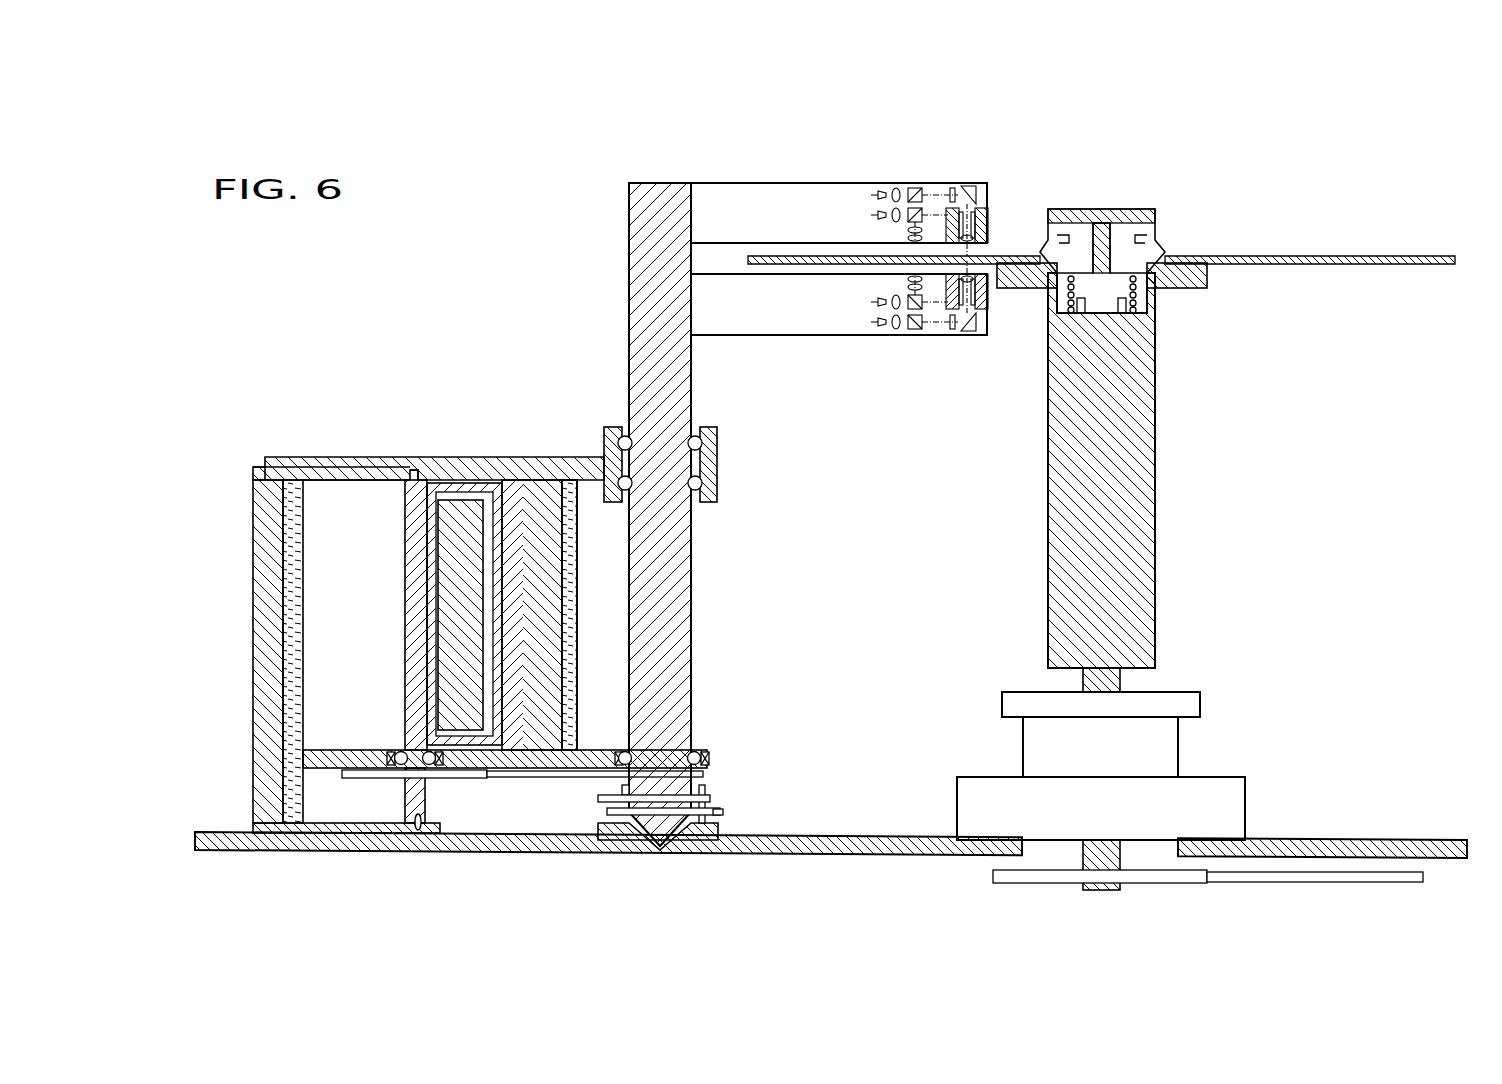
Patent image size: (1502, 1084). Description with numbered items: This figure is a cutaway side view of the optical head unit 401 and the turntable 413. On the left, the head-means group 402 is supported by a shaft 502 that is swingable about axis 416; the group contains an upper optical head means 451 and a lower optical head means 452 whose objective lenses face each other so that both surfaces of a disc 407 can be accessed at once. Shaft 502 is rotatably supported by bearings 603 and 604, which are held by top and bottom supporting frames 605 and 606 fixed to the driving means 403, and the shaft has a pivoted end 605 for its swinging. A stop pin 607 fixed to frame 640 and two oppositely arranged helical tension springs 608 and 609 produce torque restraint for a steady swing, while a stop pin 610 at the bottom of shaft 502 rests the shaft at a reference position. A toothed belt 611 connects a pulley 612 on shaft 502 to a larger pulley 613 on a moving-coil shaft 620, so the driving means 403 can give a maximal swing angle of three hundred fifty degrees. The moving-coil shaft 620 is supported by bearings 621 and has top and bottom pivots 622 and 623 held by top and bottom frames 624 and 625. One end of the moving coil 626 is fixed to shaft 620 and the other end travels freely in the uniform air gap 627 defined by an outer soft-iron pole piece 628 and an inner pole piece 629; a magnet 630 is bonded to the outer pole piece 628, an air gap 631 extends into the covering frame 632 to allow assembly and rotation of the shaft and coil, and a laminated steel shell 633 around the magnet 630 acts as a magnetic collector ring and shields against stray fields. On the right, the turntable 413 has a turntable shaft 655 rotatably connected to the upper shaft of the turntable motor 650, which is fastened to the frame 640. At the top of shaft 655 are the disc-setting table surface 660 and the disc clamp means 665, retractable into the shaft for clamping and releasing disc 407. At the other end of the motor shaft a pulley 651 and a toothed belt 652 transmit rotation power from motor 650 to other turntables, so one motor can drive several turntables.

The optical head unit 401 is at (486, 286).
The optical head-means group 402 is at (953, 374).
The driving means 403 is at (362, 362).
The disc 407 is at (1378, 256).
The turntable 413 is at (1318, 468).
The axis 416 is at (652, 182).
The upper optical head means 451 is at (987, 186).
The lower optical head means 452 is at (987, 334).
The shaft 502 is at (630, 183).
The bearing 603 is at (712, 503).
The bearing 604 is at (700, 748).
The top supporting frame 605 is at (275, 460).
The bottom supporting frame 606 is at (590, 752).
The stop pin 607 is at (712, 796).
The helical tension spring 608 is at (714, 809).
The helical tension spring 609 is at (724, 812).
The stop pin 610 is at (620, 789).
The toothed belt 611 is at (515, 778).
The pulley 612 is at (706, 775).
The pulley 613 is at (484, 779).
The moving-coil shaft 620 is at (408, 475).
The bearing 621 is at (398, 751).
The top pivot 622 is at (414, 820).
The bottom pivot 623 is at (416, 478).
The top frame 624 is at (255, 470).
The bottom frame 625 is at (252, 826).
The moving coil 626 is at (432, 488).
The air gap 627 is at (486, 490).
The outer soft-iron pole piece 628 is at (518, 494).
The inner pole piece 629 is at (456, 500).
The magnet 630 is at (568, 490).
The air gap 631 is at (336, 492).
The covering frame 632 is at (255, 545).
The laminated steel shell 633 is at (292, 632).
The frame 640 is at (1385, 843).
The turntable motor 650 is at (1180, 752).
The pulley 651 is at (993, 876).
The toothed belt 652 is at (1423, 878).
The turntable shaft 655 is at (1160, 400).
The disc-setting table surface 660 is at (1207, 285).
The disc clamp means 665 is at (1168, 247).